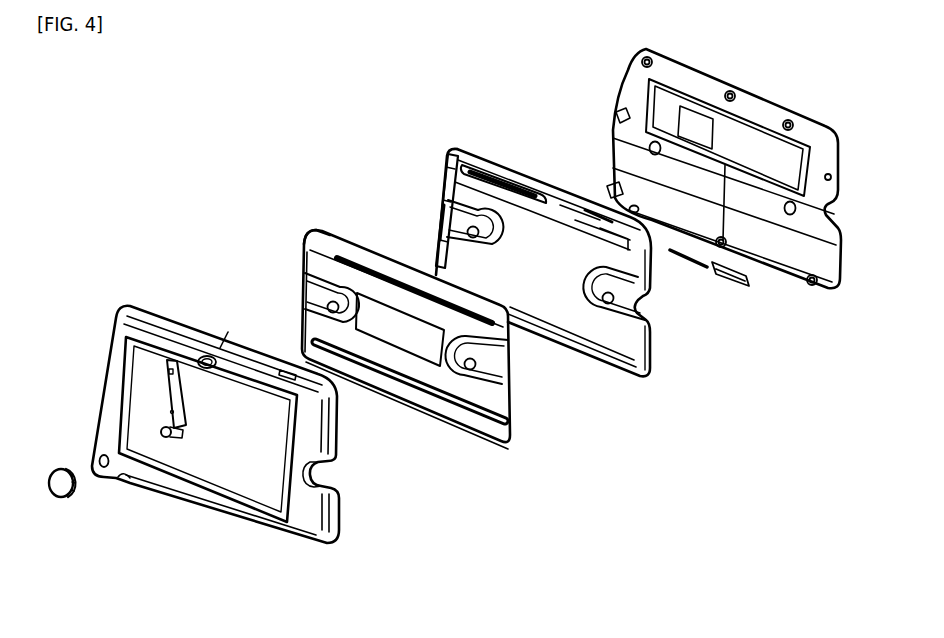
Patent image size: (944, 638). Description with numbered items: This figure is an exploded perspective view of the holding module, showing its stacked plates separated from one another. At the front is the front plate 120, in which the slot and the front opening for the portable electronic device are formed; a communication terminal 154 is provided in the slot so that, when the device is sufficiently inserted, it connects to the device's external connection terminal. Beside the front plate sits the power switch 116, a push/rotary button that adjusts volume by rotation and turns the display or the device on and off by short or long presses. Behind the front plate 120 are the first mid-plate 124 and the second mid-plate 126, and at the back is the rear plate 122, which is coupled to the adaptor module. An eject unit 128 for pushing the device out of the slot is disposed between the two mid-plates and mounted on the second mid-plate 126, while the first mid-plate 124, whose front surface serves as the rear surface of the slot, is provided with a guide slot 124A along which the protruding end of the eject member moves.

The power switch 116 is at (73, 495).
The front plate 120 is at (222, 533).
The rear plate 122 is at (604, 93).
The first mid-plate 124 is at (530, 445).
The guide slot 124A is at (310, 247).
The second mid-plate 126 is at (677, 382).
The eject unit 128 is at (433, 167).
The communication terminal 154 is at (168, 371).